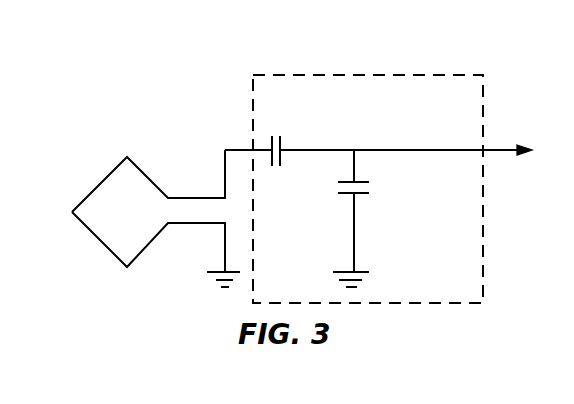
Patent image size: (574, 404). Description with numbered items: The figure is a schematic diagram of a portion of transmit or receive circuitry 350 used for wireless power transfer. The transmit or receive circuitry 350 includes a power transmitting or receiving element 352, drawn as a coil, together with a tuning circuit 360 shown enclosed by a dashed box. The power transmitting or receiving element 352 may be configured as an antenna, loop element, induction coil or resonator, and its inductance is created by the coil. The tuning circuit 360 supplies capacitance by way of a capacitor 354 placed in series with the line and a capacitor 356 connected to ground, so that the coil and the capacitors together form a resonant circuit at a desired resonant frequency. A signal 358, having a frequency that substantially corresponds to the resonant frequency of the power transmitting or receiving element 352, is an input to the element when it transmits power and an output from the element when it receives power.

The transmit or receive circuitry 350 is at (107, 50).
The power transmitting or receiving element 352 is at (100, 183).
The capacitor 354 is at (281, 139).
The capacitor 356 is at (360, 196).
The signal 358 is at (387, 149).
The tuning circuit 360 is at (465, 75).